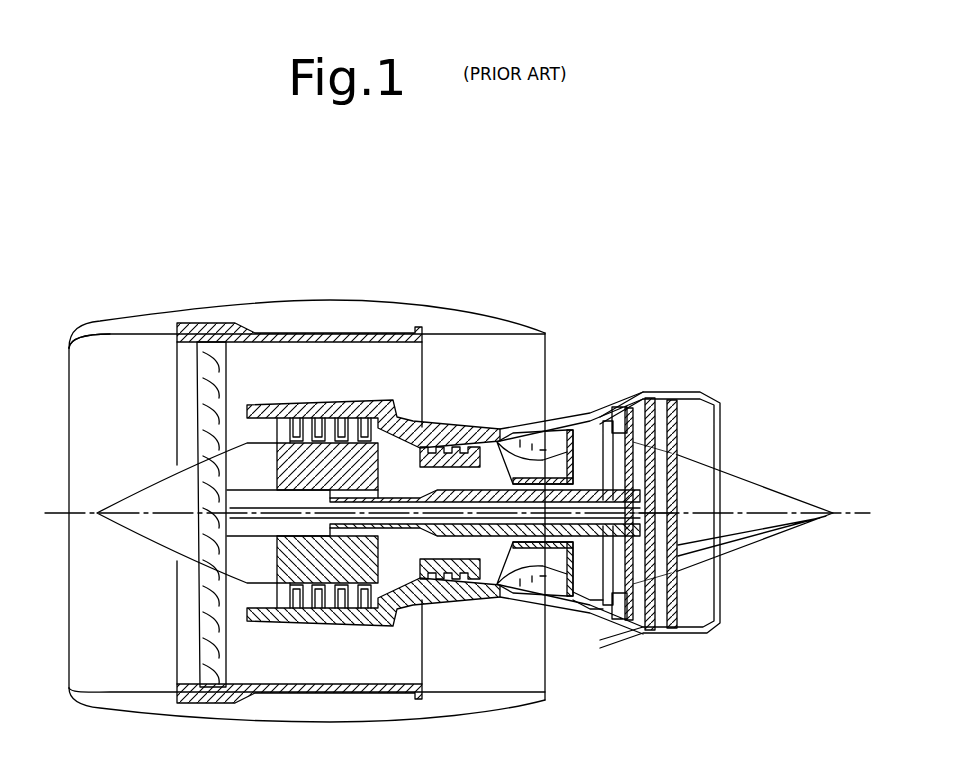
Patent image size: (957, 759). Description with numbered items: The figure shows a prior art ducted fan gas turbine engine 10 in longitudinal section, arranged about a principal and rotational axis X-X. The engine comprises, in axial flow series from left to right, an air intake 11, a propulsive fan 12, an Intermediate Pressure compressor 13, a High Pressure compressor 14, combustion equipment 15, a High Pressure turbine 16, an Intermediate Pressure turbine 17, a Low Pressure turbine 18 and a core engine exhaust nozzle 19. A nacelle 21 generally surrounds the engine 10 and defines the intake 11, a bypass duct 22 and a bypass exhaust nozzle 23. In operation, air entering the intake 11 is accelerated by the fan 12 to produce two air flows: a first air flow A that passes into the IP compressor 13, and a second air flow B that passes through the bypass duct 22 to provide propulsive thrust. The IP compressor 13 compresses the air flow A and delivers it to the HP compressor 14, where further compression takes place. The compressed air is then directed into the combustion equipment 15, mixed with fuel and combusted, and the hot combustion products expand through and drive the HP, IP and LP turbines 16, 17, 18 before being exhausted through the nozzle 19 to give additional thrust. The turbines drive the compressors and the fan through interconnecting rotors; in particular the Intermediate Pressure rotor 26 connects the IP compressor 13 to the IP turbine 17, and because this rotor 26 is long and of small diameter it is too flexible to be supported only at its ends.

The ducted fan gas turbine engine 10 is at (143, 276).
The air intake 11 is at (122, 340).
The propulsive fan 12 is at (203, 635).
The Intermediate Pressure (IP) compressor 13 is at (337, 603).
The High Pressure (HP) compressor 14 is at (455, 429).
The combustion equipment 15 is at (510, 578).
The High Pressure (HP) turbine 16 is at (563, 600).
The Intermediate Pressure (IP) turbine 17 is at (597, 417).
The Low Pressure (LP) turbine 18 is at (617, 627).
The core engine exhaust nozzle 19 is at (715, 400).
The nacelle 21 is at (307, 313).
The bypass duct 22 is at (514, 378).
The bypass exhaust nozzle 23 is at (548, 333).
The Intermediate Pressure (IP) rotor 26 is at (641, 397).
The first air flow A is at (258, 428).
The second air flow B is at (268, 372).
The principal and rotational axis X is at (457, 514).